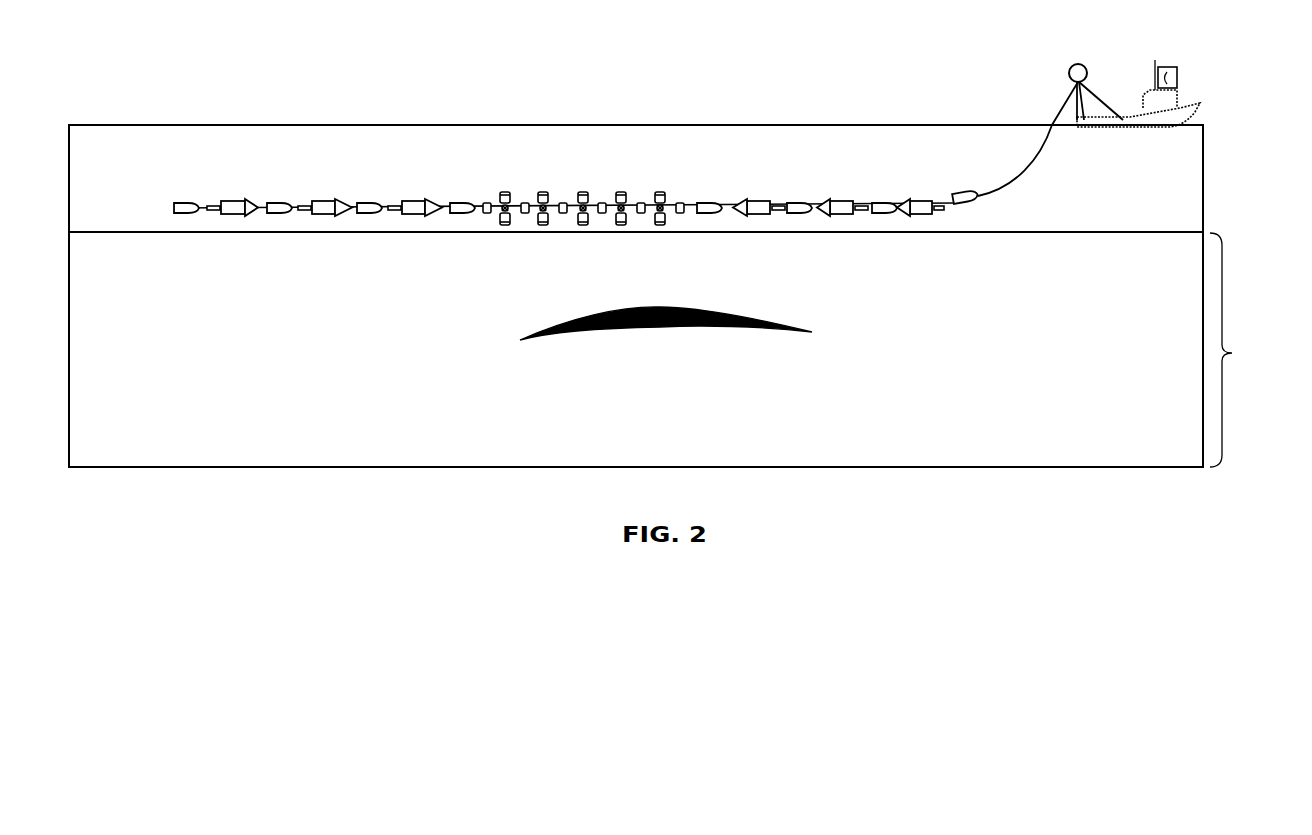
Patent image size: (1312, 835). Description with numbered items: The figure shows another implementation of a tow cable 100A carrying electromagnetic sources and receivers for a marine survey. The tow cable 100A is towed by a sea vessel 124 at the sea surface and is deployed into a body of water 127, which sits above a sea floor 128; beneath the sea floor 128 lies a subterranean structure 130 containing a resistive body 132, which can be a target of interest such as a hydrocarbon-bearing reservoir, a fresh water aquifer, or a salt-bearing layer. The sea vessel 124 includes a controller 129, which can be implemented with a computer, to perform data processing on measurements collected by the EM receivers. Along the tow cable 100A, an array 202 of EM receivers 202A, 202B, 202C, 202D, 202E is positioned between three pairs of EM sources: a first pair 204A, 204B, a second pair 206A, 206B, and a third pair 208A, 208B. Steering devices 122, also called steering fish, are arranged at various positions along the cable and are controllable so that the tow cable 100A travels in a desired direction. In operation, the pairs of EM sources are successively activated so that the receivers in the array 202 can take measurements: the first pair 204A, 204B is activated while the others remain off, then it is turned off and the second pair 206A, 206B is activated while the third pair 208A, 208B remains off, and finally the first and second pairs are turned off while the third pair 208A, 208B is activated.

The tow cable 100A is at (1049, 108).
The steering devices 122 is at (565, 152).
The sea vessel 124 is at (1171, 93).
The body of water 127 is at (1131, 161).
The sea floor 128 is at (687, 196).
The controller 129 is at (1200, 63).
The subterranean structure 130 is at (1129, 350).
The resistive body 132 is at (733, 340).
The array of EM receivers 202 is at (550, 145).
The EM receiver 202A is at (446, 136).
The EM receiver 202B is at (499, 129).
The EM receiver 202C is at (544, 118).
The EM receiver 202D is at (642, 134).
The EM receiver 202E is at (683, 146).
The EM source of first pair 204A is at (789, 134).
The EM source of first pair 204B is at (367, 137).
The EM source of second pair 206A is at (874, 134).
The EM source of second pair 206B is at (276, 137).
The EM source of third pair 208A is at (956, 134).
The EM source of third pair 208B is at (185, 137).